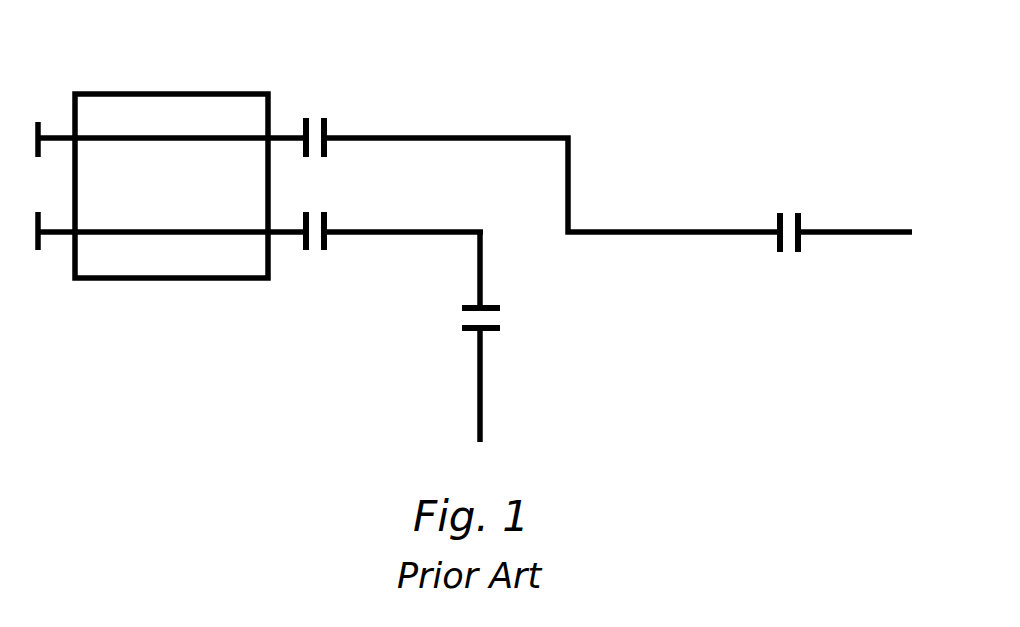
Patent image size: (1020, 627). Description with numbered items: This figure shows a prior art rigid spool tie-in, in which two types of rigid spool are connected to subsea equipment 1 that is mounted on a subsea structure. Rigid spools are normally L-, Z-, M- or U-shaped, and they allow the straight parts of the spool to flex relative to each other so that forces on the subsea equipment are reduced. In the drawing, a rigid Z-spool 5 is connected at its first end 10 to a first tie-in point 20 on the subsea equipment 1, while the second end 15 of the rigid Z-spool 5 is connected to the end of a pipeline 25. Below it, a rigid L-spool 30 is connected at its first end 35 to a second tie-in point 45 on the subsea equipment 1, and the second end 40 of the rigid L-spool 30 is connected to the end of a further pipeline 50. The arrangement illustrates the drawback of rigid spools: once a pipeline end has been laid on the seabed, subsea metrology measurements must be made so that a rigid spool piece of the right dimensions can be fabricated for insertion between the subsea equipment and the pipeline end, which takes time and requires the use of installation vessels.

The subsea equipment 1 is at (186, 252).
The rigid Z-spool 5 is at (500, 137).
The first end 10 is at (327, 127).
The second end 15 is at (778, 220).
The first tie-in point 20 is at (306, 129).
The pipeline 25 is at (857, 235).
The rigid L-spool 30 is at (430, 230).
The first end 35 is at (323, 250).
The second end 40 is at (487, 307).
The second tie-in point 45 is at (303, 218).
The pipeline 50 is at (480, 375).